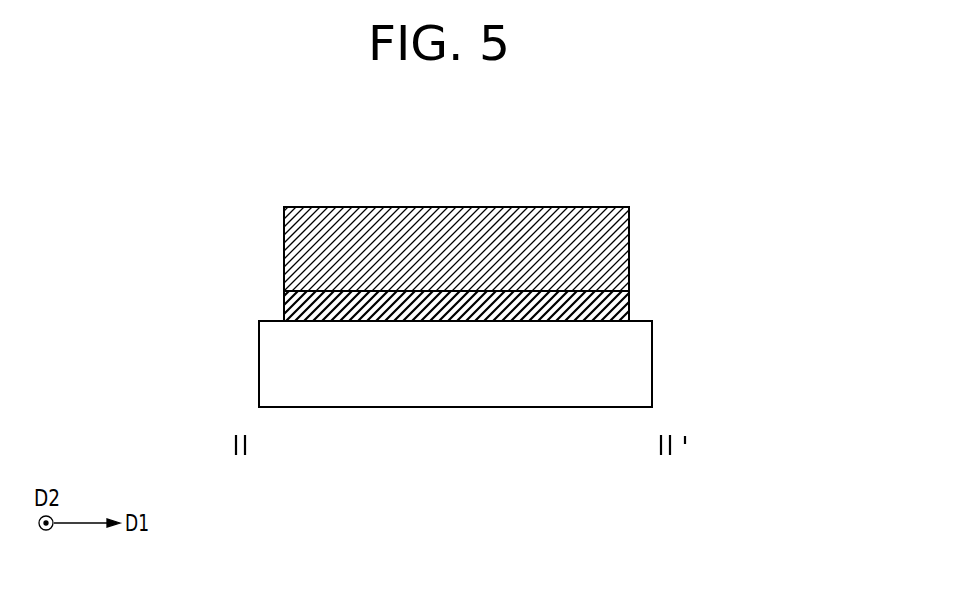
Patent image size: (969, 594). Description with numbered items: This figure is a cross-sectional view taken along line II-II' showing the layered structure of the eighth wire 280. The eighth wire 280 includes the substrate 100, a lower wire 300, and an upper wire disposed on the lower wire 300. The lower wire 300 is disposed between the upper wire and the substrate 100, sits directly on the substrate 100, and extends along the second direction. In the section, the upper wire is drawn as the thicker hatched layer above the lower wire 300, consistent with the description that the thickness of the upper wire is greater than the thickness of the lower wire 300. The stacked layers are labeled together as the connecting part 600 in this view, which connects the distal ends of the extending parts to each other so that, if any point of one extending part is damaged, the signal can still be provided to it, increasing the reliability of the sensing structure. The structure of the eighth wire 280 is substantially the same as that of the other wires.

The substrate 100 is at (652, 360).
The eighth wire 280 is at (493, 246).
The lower wire 300 is at (629, 302).
The connecting part 600 is at (629, 249).